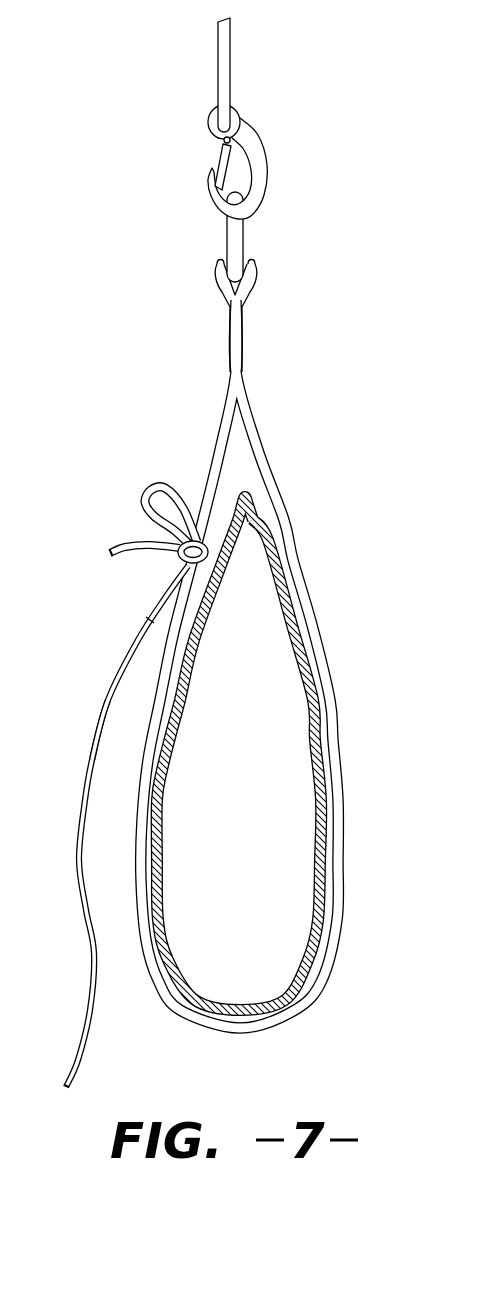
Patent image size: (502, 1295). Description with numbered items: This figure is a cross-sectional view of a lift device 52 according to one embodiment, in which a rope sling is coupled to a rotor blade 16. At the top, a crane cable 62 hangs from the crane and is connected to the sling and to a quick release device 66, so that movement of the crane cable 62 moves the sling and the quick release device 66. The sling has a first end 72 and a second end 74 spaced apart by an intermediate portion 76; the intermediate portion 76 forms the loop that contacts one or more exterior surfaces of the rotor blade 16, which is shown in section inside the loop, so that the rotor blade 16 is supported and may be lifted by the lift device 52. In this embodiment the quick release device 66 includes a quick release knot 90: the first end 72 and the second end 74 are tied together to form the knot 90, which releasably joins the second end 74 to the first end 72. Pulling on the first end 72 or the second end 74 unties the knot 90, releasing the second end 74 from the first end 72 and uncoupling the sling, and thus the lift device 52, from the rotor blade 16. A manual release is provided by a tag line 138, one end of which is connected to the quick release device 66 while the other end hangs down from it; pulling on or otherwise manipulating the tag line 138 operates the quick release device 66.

The rotor blade 16 is at (265, 732).
The lift device 52 is at (146, 234).
The crane cable 62 is at (234, 66).
The quick release device 66 is at (108, 733).
The first end 72 is at (132, 530).
The second end 74 is at (160, 597).
The intermediate portion 76 is at (265, 448).
The quick release knot 90 is at (192, 470).
The tag line 138 is at (74, 832).